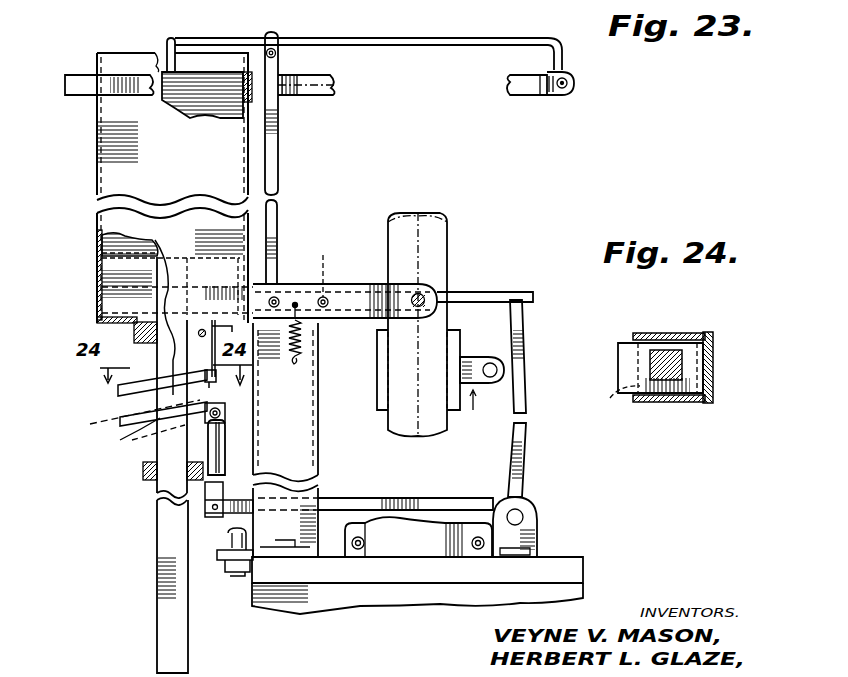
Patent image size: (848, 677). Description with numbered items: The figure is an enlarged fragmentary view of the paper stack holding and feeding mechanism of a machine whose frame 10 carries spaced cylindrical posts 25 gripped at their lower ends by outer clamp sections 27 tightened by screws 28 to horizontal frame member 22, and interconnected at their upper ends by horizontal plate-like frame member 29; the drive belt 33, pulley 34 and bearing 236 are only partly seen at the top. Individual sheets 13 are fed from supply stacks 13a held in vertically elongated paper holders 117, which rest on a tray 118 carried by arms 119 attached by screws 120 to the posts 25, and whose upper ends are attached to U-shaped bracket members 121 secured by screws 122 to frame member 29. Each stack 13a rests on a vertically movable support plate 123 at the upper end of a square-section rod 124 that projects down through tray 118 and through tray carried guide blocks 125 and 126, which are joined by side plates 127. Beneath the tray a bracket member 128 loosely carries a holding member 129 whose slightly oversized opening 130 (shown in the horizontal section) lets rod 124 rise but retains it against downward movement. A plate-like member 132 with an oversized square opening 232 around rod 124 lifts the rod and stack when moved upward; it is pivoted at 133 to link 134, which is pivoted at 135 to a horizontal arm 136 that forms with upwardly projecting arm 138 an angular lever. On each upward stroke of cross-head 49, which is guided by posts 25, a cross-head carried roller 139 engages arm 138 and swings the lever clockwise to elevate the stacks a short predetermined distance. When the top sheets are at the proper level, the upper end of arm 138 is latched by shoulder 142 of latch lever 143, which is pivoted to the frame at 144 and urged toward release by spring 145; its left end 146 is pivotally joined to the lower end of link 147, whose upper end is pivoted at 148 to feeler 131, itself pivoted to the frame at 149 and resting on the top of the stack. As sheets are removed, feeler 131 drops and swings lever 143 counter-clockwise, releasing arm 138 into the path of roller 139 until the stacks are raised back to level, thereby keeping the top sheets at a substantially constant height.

In FIG. 23, the frame 10 is at (444, 613).
In FIG. 23, the sheets of paper 13 is at (190, 70).
In FIG. 23, the supply stacks 13a is at (178, 100).
In FIG. 23, the horizontal frame member 22 is at (580, 565).
In FIG. 23, the cylindrical posts 25 is at (390, 432).
In FIG. 23, the outer clamp sections 27 is at (380, 578).
In FIG. 23, the screws 28 is at (365, 543).
In FIG. 23, the horizontal plate-like frame member 29 is at (318, 75).
In FIG. 23, the belt 33 is at (48, 5).
In FIG. 23, the pulley 34 is at (133, 9).
In FIG. 23, the cross-head 49 is at (375, 392).
In FIG. 23, the paper holders 117 is at (97, 200).
In FIG. 23, the tray 118 is at (98, 320).
In FIG. 23, the arms 119 is at (373, 284).
In FIG. 23, the screws 120 is at (419, 293).
In FIG. 23, the U-shaped bracket members 121 is at (80, 77).
In FIG. 23, the screws 122 is at (283, 96).
In FIG. 23, the support plate 123 is at (100, 270).
In FIG. 23, the rod 124 is at (157, 533).
In FIG. 23, the guide block 125 is at (134, 326).
In FIG. 23, the guide block 126 is at (143, 472).
In FIG. 24, the guide block 126 is at (621, 401).
In FIG. 23, the side plates 127 is at (140, 412).
In FIG. 24, the side plates 127 is at (645, 333).
In FIG. 23, the bracket member 128 is at (216, 384).
In FIG. 24, the bracket member 128 is at (713, 370).
In FIG. 23, the holding member 129 is at (118, 390).
In FIG. 24, the holding member 129 is at (620, 363).
In FIG. 23, the opening 130 is at (131, 414).
In FIG. 24, the opening 130 is at (660, 350).
In FIG. 23, the feeler 131 is at (245, 38).
In FIG. 23, the vertically movable member 132 is at (120, 440).
In FIG. 23, the pivot 133 is at (225, 413).
In FIG. 23, the link 134 is at (226, 457).
In FIG. 23, the pivot 135 is at (225, 506).
In FIG. 23, the arm 136 is at (405, 498).
In FIG. 23, the upwardly projecting arm 138 is at (525, 392).
In FIG. 23, the roller 139 is at (494, 384).
In FIG. 23, the shoulder 142 is at (518, 300).
In FIG. 23, the latch lever 143 is at (472, 291).
In FIG. 23, the pivot 144 is at (324, 273).
In FIG. 23, the spring 145 is at (290, 363).
In FIG. 23, the left end of latch lever 146 is at (278, 296).
In FIG. 23, the link 147 is at (279, 205).
In FIG. 23, the pivot 148 is at (280, 40).
In FIG. 23, the pivot 149 is at (560, 93).
In FIG. 23, the square opening 232 is at (145, 438).
In FIG. 23, the bearing 236 is at (184, 7).